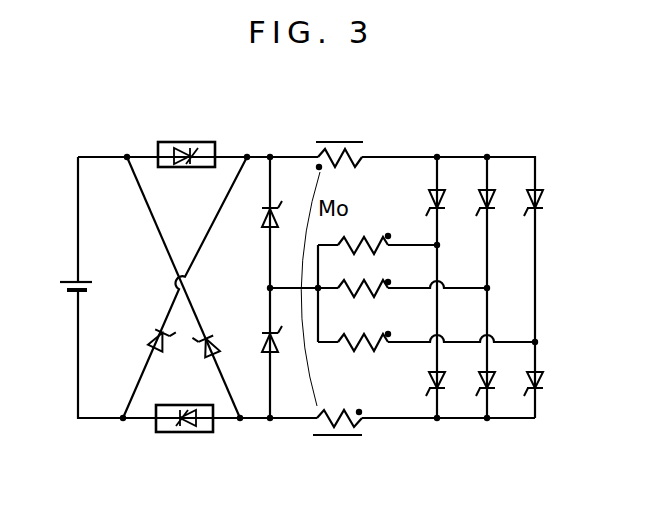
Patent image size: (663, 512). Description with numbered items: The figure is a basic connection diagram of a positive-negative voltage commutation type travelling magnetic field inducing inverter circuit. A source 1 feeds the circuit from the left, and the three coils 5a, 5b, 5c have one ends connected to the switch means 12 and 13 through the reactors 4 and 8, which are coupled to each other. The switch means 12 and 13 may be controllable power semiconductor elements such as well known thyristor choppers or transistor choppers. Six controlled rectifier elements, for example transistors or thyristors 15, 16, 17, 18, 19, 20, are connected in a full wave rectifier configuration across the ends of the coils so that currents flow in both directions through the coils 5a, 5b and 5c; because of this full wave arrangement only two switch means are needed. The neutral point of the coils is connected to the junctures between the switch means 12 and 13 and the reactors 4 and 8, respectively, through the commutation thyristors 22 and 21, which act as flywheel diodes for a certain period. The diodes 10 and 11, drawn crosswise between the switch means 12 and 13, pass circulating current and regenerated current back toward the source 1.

The battery 1 is at (70, 281).
The reactor 4 is at (338, 142).
The reactor 8 is at (331, 437).
The coil 5a is at (387, 236).
The coil 5b is at (387, 282).
The coil 5c is at (387, 334).
The diode 10 is at (204, 350).
The diode 11 is at (150, 352).
The switch means 12 is at (170, 142).
The switch means 13 is at (172, 433).
The thyristor 15 is at (447, 185).
The thyristor 16 is at (491, 382).
The thyristor 17 is at (543, 203).
The thyristor 18 is at (441, 382).
The thyristor 19 is at (493, 187).
The thyristor 20 is at (542, 386).
The commutation thyristor 21 is at (262, 342).
The commutation thyristor 22 is at (262, 220).